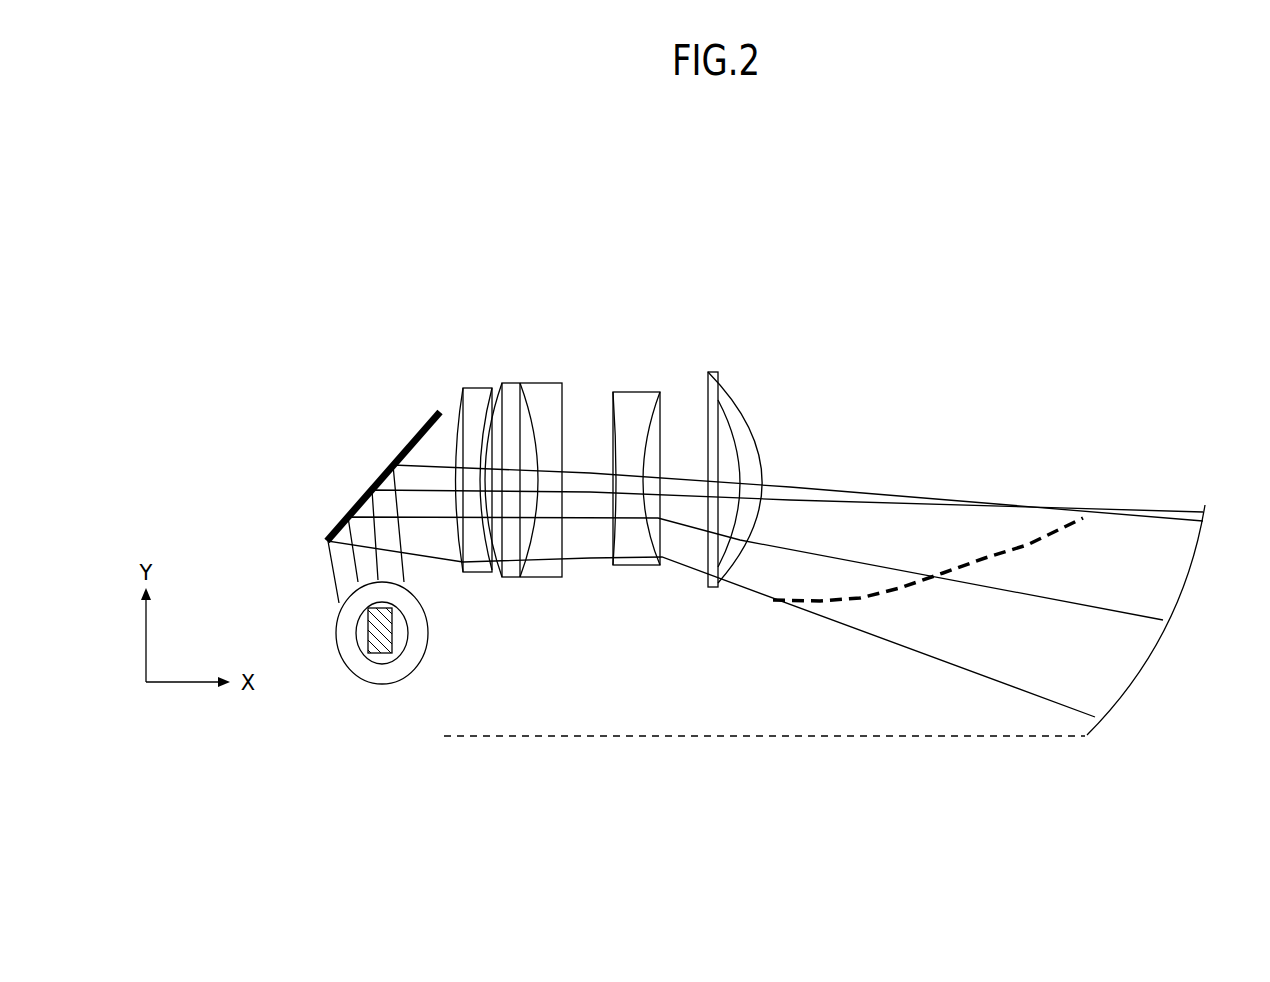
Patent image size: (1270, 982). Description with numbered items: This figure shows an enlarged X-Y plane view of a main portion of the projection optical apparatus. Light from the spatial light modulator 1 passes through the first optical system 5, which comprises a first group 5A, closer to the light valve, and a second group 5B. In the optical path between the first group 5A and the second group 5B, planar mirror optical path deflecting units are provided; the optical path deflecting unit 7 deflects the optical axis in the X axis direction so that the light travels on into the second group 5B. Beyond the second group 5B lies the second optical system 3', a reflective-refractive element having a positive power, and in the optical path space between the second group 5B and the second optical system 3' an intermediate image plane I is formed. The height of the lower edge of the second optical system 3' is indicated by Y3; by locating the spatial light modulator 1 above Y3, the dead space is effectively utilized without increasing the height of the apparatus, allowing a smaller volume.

The spatial light modulator 1 is at (365, 622).
The second optical system 3' is at (1146, 620).
The first optical system 5 is at (411, 361).
The first group 5A is at (418, 632).
The second group 5B is at (747, 373).
The optical path deflecting unit 7 is at (363, 490).
The intermediate image plane I is at (1023, 545).
The height of the lower edge of the second optical system Y3 is at (749, 738).